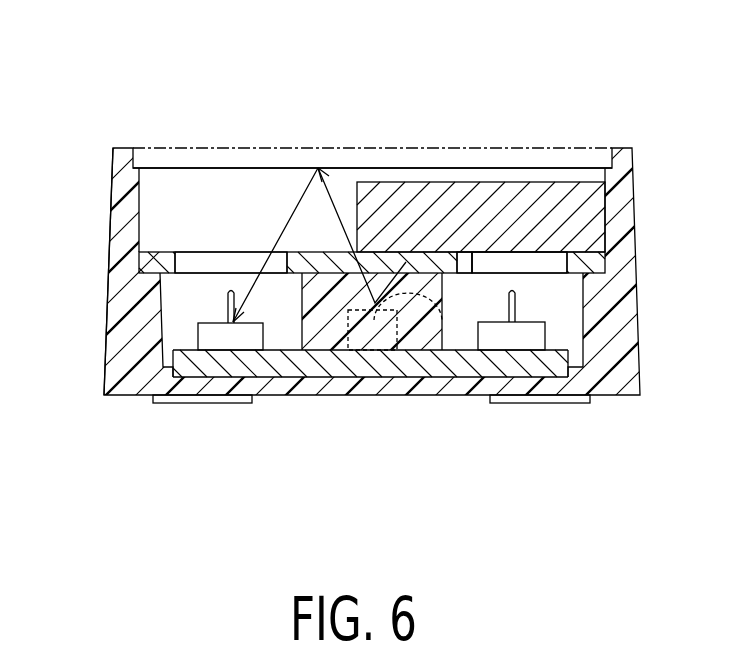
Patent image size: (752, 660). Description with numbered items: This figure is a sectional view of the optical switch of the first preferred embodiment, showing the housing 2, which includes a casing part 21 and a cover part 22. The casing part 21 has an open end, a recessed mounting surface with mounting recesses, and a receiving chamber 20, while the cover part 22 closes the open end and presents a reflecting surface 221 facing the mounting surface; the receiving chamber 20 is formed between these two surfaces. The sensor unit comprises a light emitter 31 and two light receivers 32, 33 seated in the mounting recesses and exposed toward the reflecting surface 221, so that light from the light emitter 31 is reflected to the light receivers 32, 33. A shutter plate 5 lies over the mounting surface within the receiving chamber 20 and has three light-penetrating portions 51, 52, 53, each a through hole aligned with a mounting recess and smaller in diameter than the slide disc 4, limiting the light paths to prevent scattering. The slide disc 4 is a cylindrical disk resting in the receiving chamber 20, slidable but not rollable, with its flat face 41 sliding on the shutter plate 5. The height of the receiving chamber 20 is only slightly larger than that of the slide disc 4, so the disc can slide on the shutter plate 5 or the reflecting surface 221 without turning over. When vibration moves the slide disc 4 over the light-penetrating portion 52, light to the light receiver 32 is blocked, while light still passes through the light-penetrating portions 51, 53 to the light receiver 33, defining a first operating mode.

The housing 2 is at (640, 262).
The casing part 21 is at (108, 266).
The cover part 22 is at (325, 148).
The reflecting surface 221 is at (351, 182).
The receiving chamber 20 is at (185, 188).
The shutter plate 5 is at (228, 238).
The light-penetrating portion 51 is at (424, 262).
The light-penetrating portion 52 is at (537, 262).
The light-penetrating portion 53 is at (192, 262).
The flat face 41 is at (466, 272).
The slide disc 4 is at (507, 172).
The light emitter 31 is at (372, 332).
The light receiver 32 is at (520, 336).
The light receiver 33 is at (217, 340).